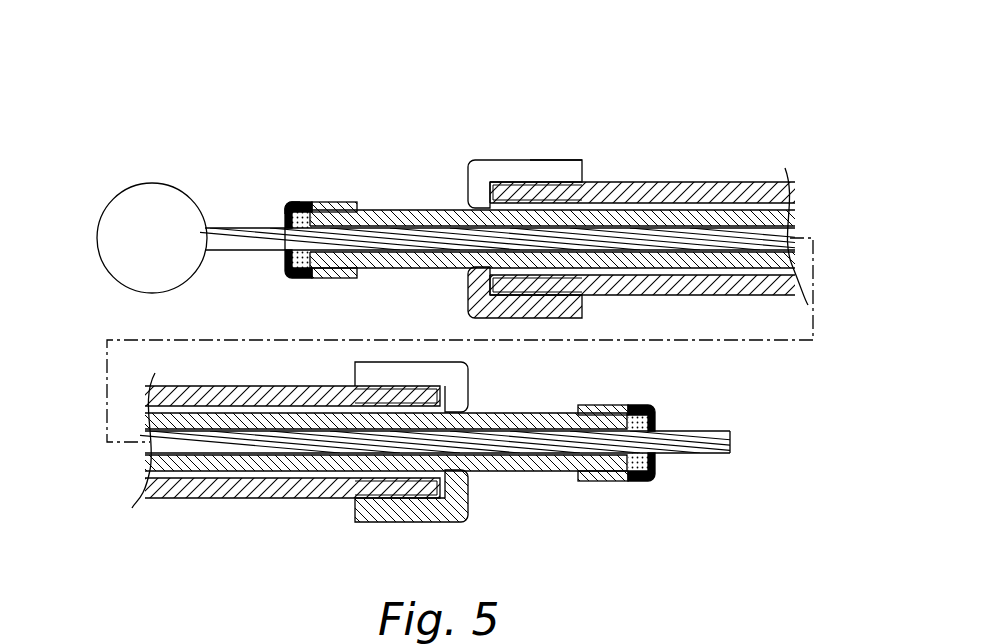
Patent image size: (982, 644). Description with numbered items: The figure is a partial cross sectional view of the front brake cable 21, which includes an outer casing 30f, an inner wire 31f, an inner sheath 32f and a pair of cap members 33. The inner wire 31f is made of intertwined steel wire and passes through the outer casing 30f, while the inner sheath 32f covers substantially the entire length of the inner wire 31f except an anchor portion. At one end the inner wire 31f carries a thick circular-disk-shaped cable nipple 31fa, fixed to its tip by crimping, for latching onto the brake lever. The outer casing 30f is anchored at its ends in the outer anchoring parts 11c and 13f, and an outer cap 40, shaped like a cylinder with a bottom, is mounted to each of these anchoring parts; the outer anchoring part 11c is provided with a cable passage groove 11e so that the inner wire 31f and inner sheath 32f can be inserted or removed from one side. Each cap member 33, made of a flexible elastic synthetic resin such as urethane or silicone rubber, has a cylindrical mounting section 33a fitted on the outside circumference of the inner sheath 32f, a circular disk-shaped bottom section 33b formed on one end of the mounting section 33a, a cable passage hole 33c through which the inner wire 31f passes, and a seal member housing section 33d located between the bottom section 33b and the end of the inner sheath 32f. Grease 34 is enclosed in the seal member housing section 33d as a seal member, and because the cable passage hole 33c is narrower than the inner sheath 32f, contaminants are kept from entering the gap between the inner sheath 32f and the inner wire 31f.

The front brake cable 21 is at (404, 88).
The cable nipple 31fa is at (147, 193).
The inner wire 31f is at (517, 438).
The inner sheath 32f is at (433, 210).
The outer casing 30f is at (698, 183).
The cap member 33 is at (470, 278).
The mounting section 33a is at (348, 200).
The bottom section 33b is at (287, 205).
The cable passage hole 33c is at (282, 243).
The seal member housing section 33d is at (303, 212).
The grease 34 is at (459, 293).
The outer cap 40 is at (553, 183).
The cable passage groove 11e is at (531, 168).
The outer anchoring part 11c is at (548, 156).
The outer anchoring part 13f is at (448, 516).